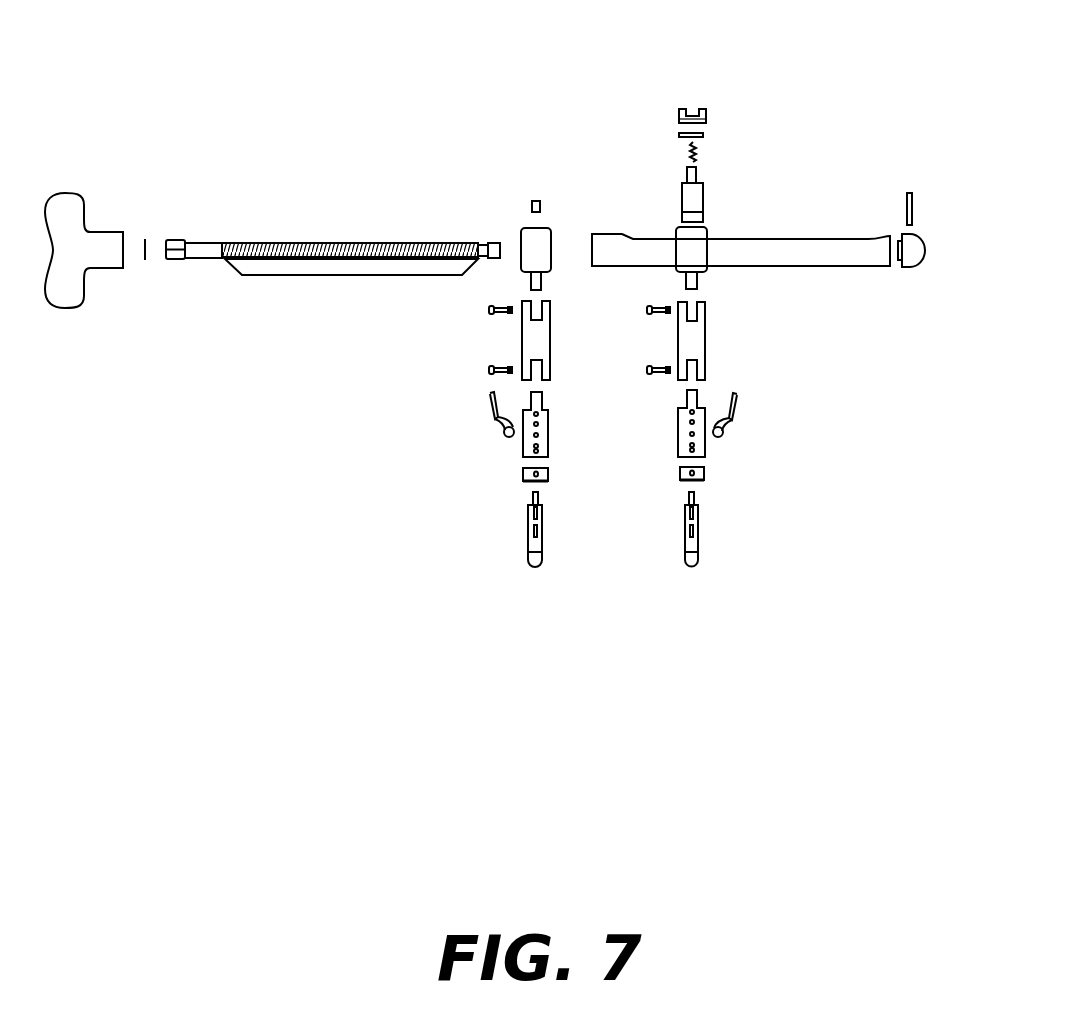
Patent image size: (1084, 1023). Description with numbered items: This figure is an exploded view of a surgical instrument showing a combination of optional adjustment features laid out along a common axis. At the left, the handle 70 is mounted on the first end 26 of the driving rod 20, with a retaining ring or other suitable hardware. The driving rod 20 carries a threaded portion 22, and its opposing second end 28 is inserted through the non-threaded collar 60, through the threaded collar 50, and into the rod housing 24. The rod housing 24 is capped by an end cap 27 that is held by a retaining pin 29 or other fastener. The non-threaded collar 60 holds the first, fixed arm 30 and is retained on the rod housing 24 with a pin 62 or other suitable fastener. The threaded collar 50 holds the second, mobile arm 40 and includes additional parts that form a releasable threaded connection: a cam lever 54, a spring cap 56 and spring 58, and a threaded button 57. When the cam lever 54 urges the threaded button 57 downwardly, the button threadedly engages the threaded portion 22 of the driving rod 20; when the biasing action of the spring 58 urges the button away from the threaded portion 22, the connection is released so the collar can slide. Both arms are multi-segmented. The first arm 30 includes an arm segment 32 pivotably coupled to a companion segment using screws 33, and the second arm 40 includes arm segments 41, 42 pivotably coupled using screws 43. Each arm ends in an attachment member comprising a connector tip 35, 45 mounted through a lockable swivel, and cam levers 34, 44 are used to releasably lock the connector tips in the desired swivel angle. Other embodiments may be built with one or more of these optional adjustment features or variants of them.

The driving rod 20 is at (321, 240).
The threaded portion 22 is at (355, 275).
The rod housing 24 is at (844, 270).
The first end 26 is at (174, 240).
The end cap 27 is at (910, 270).
The second end 28 is at (493, 243).
The retaining pin 29 is at (913, 190).
The first arm 30 is at (573, 450).
The arm segment 32 is at (549, 428).
The screws 33 is at (486, 310).
The cam lever 34 is at (487, 400).
The connector tip 35 is at (542, 548).
The second arm 40 is at (518, 75).
The arm segment 41 is at (678, 330).
The arm segment 42 is at (678, 424).
The screws 43 is at (658, 372).
The cam lever 44 is at (742, 396).
The connector tip 45 is at (698, 545).
The threaded collar 50 is at (709, 284).
The cam lever 54 is at (708, 112).
The spring cap 56 is at (706, 132).
The threaded button 57 is at (706, 192).
The spring 58 is at (706, 148).
The non-threaded collar 60 is at (554, 284).
The pin 62 is at (539, 198).
The handle 70 is at (96, 278).